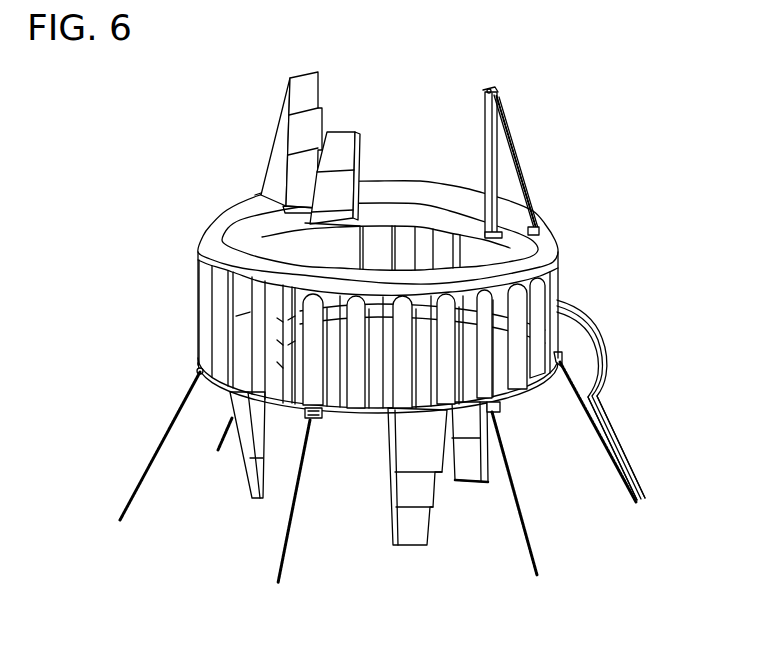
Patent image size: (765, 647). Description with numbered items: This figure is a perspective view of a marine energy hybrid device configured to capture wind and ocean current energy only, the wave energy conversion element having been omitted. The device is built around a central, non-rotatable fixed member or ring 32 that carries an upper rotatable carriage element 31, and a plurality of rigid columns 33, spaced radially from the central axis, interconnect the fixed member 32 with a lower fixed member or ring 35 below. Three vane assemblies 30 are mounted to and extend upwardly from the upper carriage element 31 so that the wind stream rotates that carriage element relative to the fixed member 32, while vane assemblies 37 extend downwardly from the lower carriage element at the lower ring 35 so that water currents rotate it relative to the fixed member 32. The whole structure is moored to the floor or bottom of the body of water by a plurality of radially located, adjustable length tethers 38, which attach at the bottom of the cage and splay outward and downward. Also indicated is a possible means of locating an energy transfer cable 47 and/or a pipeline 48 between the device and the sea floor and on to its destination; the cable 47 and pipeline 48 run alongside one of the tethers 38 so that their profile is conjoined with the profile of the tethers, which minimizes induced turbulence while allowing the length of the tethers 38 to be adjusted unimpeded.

The vane assembly 30 is at (260, 126).
The upper rotatable carriage element 31 is at (252, 217).
The fixed member 32 is at (212, 232).
The rigid column 33 is at (205, 318).
The lower fixed member 35 is at (379, 457).
The vane assembly 37 is at (240, 487).
The tether 38 is at (137, 493).
The energy transfer cable 47 is at (605, 350).
The pipeline 48 is at (608, 430).